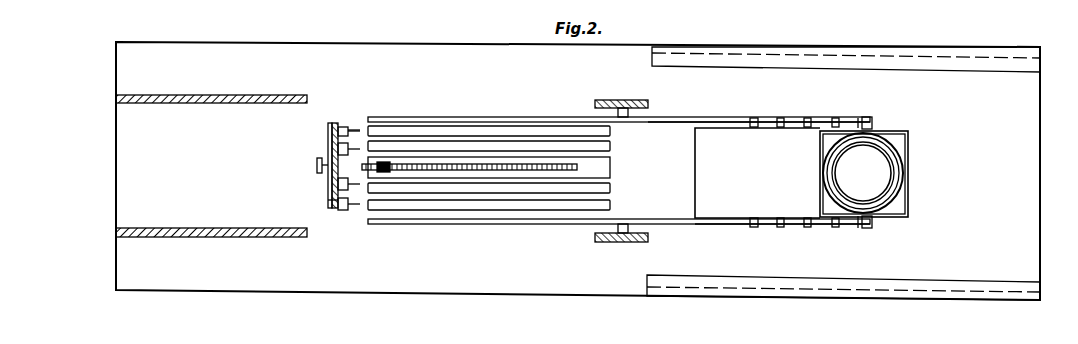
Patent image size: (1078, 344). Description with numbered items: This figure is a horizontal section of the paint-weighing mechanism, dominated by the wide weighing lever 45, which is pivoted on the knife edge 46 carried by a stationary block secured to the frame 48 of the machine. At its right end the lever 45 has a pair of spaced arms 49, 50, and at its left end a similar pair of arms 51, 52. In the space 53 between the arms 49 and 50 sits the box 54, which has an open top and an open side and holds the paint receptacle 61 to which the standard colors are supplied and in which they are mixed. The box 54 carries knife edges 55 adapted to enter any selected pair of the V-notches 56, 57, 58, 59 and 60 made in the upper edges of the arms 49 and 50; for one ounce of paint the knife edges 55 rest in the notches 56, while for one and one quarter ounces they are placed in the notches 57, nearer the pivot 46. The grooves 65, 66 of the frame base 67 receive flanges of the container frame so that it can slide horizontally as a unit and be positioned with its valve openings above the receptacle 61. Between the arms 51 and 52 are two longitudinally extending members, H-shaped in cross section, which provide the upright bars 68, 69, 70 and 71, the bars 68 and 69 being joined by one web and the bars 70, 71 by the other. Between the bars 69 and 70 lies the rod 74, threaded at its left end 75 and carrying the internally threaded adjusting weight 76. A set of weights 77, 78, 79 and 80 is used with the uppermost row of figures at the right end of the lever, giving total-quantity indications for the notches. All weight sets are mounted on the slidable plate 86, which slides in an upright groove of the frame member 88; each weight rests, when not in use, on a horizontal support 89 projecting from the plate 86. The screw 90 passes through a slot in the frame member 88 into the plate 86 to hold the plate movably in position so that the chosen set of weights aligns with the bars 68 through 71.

The weighing lever 45 is at (677, 222).
The knife edge 46 is at (624, 228).
The frame 48 is at (633, 240).
The arm 49 is at (734, 122).
The arm 50 is at (727, 224).
The arm 51 is at (463, 117).
The arm 52 is at (463, 222).
The space 53 is at (790, 135).
The box 54 is at (908, 206).
The knife edges 55 is at (867, 119).
The V-notch 56 is at (860, 229).
The V-notch 57 is at (834, 183).
The V-notch 58 is at (801, 183).
The V-notch 59 is at (774, 183).
The V-notch 60 is at (748, 183).
The paint receptacle 61 is at (904, 163).
The groove 65 is at (973, 292).
The groove 66 is at (1018, 66).
The frame base 67 is at (1040, 250).
The upright bar 68 is at (385, 131).
The upright bar 69 is at (419, 150).
The upright bar 70 is at (422, 185).
The upright bar 71 is at (444, 207).
The rod 74 is at (517, 158).
The threaded end 75 is at (377, 167).
The adjusting weight 76 is at (394, 163).
The weight 77 is at (343, 126).
The weight 78 is at (333, 148).
The weight 79 is at (336, 184).
The weight 80 is at (341, 211).
The slidable plate 86 is at (328, 168).
The frame member 88 is at (330, 201).
The horizontal support 89 is at (364, 125).
The screw 90 is at (316, 160).